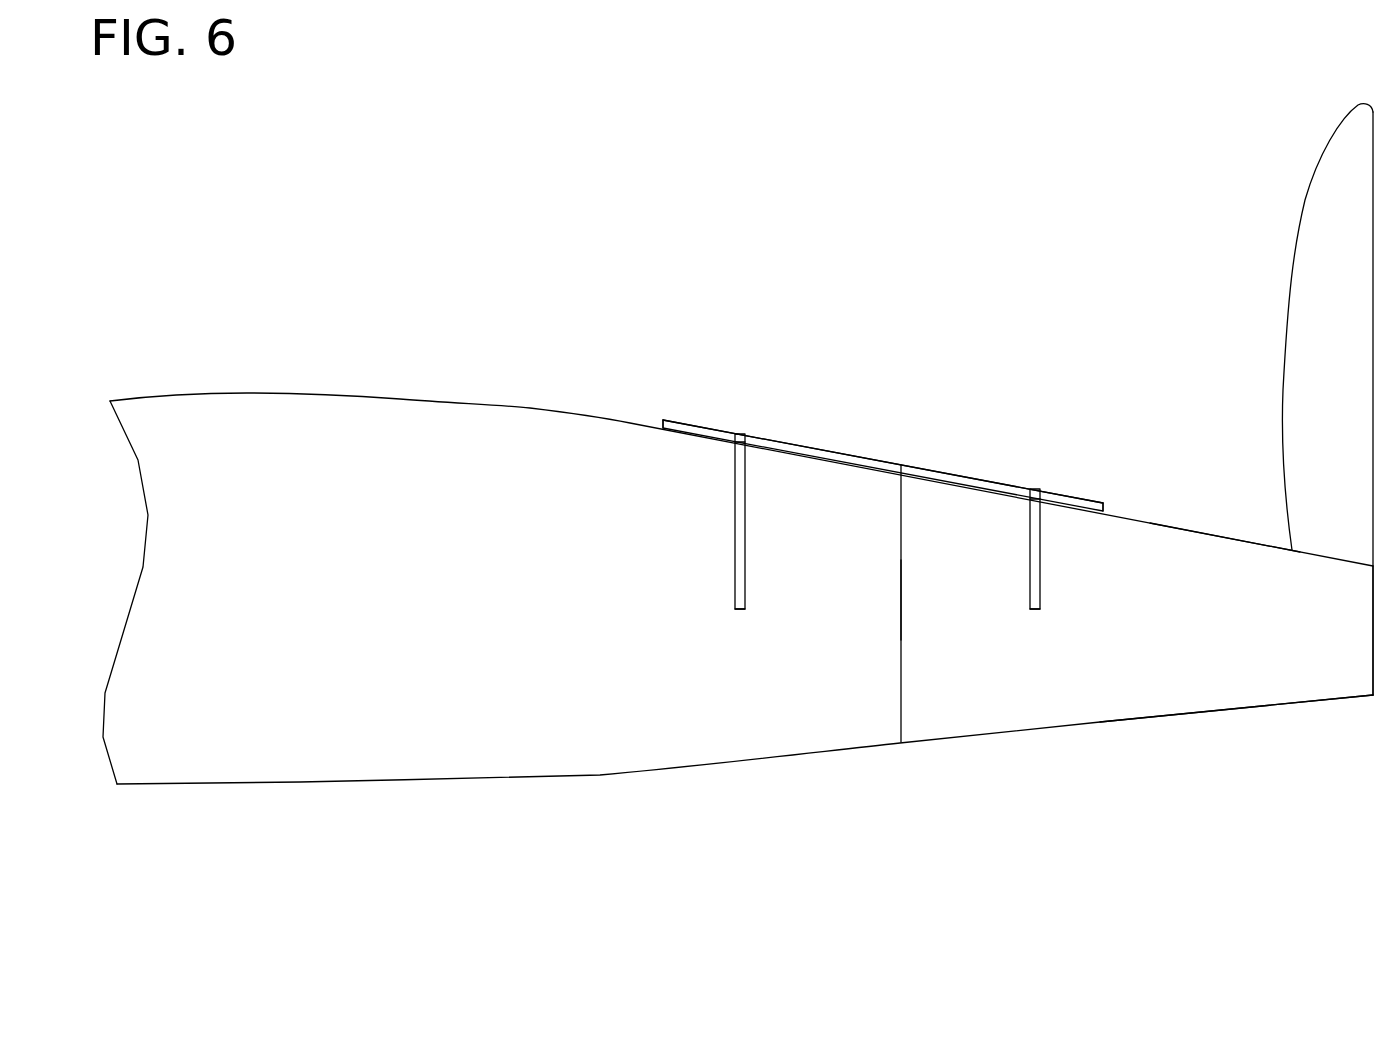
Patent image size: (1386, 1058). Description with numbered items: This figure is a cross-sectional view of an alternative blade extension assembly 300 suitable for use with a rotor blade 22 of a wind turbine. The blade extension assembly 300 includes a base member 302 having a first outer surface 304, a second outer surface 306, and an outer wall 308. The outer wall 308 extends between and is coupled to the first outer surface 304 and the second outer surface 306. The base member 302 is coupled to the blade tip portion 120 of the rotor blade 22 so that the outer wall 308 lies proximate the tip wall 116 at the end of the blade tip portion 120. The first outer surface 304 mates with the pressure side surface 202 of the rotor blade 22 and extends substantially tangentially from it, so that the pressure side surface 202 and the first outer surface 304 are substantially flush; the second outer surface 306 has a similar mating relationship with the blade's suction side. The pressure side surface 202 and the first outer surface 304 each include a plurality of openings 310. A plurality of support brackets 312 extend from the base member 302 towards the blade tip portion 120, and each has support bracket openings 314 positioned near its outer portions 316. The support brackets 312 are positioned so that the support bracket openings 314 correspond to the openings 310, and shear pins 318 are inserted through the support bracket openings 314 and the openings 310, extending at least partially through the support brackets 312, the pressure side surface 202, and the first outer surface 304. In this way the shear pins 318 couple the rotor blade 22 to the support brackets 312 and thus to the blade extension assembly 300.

The rotor blade 22 is at (565, 258).
The tip wall 116 is at (898, 597).
The blade tip portion 120 is at (732, 870).
The pressure side surface 202 is at (631, 423).
The blade extension assembly 300 is at (1012, 175).
The base member 302 is at (1272, 710).
The first outer surface 304 is at (1237, 540).
The second outer surface 306 is at (1188, 715).
The outer wall 308 is at (901, 698).
The openings 310 is at (738, 455).
The support brackets 312 is at (902, 464).
The support bracket openings 314 is at (741, 434).
The outer portions 316 is at (683, 419).
The shear pins 318 is at (733, 540).